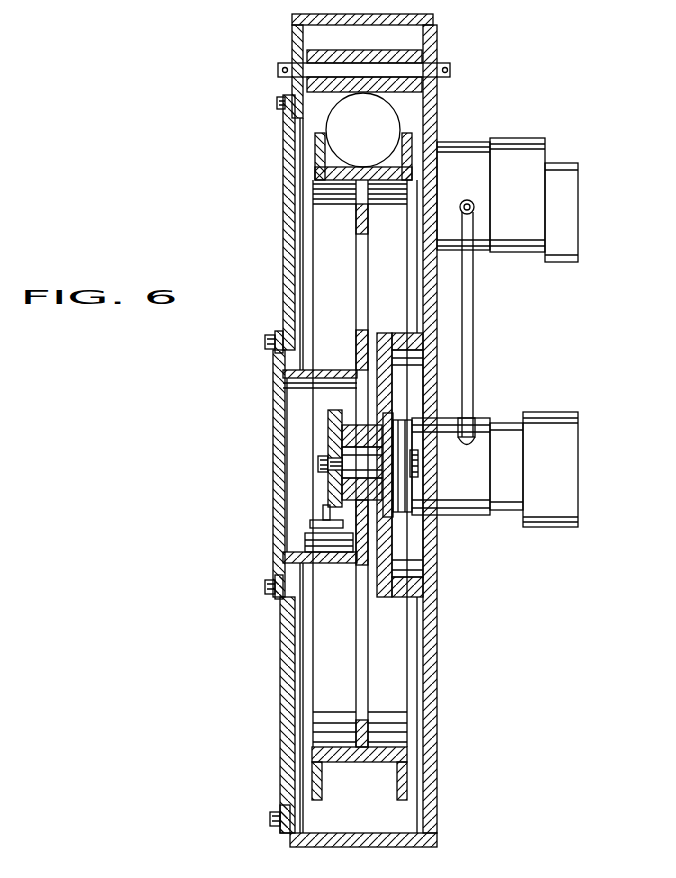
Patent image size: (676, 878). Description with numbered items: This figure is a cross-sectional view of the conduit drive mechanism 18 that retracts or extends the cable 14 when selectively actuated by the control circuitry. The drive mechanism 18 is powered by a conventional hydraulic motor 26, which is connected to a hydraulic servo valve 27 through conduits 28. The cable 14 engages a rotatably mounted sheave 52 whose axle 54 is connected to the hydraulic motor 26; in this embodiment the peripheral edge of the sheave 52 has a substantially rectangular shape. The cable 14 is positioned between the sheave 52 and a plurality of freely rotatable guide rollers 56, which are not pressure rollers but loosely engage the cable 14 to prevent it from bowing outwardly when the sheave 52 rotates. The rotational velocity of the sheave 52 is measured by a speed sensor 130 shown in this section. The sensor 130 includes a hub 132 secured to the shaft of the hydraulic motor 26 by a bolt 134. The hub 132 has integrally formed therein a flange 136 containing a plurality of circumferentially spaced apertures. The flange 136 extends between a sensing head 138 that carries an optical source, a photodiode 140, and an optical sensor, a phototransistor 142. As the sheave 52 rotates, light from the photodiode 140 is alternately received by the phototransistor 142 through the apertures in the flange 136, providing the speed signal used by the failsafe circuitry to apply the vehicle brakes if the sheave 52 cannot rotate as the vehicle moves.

The cable 14 is at (330, 113).
The drive mechanism 18 is at (462, 112).
The hydraulic motor 26 is at (480, 440).
The hydraulic servo valve 27 is at (515, 150).
The conduits 28 is at (470, 322).
The sheave 52 is at (327, 243).
The axle 54 is at (380, 460).
The guide rollers 56 is at (415, 52).
The speed sensor 130 is at (322, 478).
The hub 132 is at (330, 428).
The bolt 134 is at (320, 462).
The flange 136 is at (325, 512).
The sensing head 138 is at (318, 540).
The photodiode 140 is at (318, 524).
The phototransistor 142 is at (350, 517).